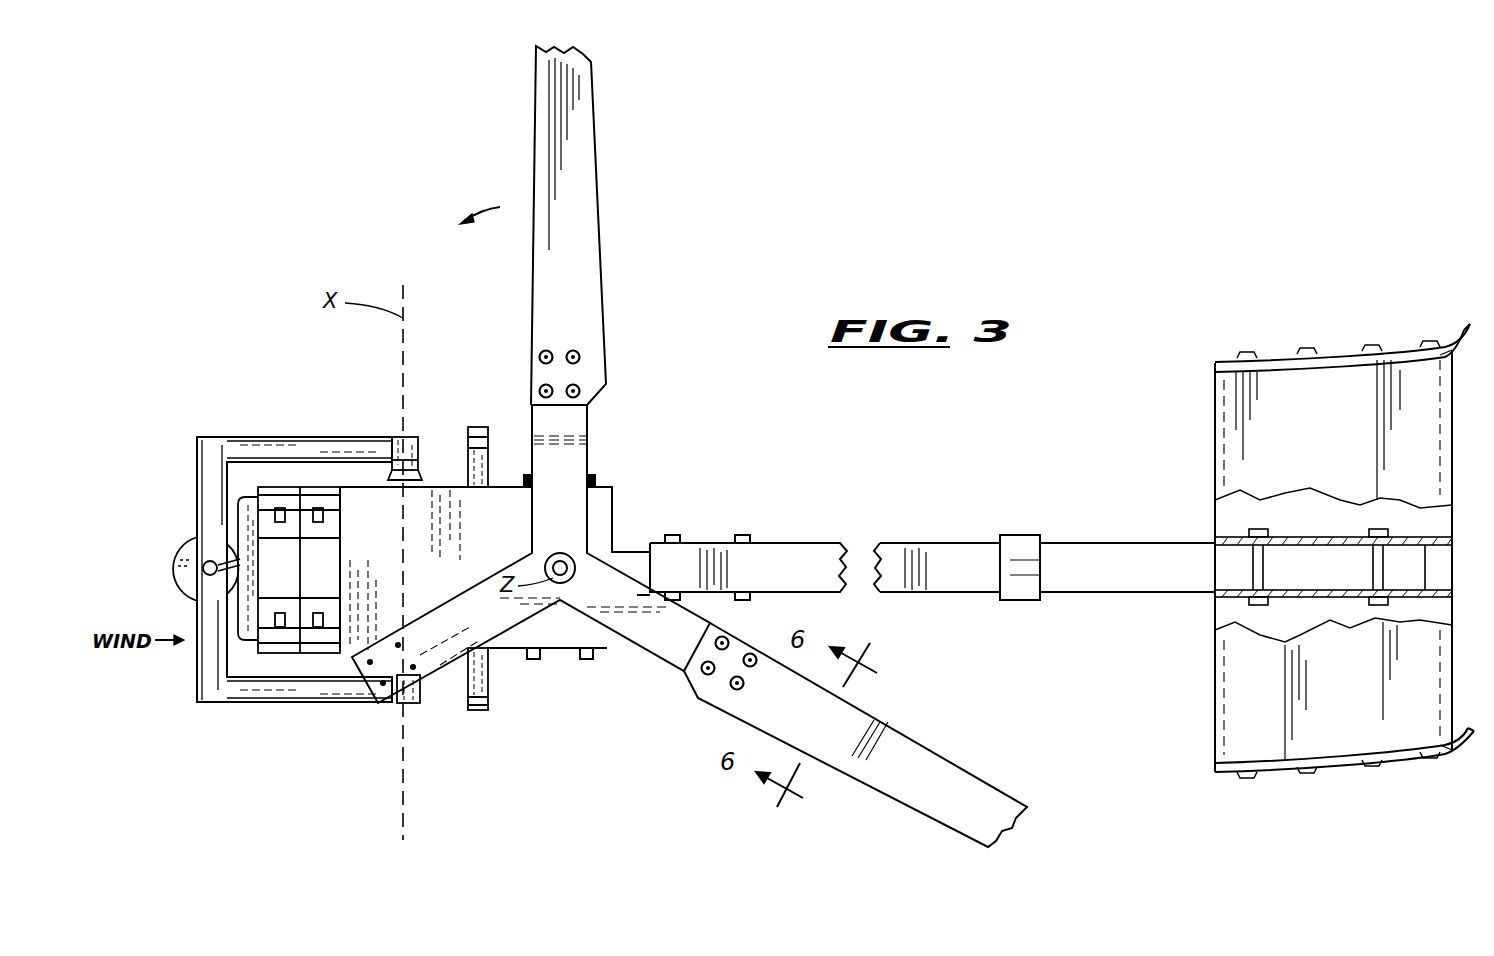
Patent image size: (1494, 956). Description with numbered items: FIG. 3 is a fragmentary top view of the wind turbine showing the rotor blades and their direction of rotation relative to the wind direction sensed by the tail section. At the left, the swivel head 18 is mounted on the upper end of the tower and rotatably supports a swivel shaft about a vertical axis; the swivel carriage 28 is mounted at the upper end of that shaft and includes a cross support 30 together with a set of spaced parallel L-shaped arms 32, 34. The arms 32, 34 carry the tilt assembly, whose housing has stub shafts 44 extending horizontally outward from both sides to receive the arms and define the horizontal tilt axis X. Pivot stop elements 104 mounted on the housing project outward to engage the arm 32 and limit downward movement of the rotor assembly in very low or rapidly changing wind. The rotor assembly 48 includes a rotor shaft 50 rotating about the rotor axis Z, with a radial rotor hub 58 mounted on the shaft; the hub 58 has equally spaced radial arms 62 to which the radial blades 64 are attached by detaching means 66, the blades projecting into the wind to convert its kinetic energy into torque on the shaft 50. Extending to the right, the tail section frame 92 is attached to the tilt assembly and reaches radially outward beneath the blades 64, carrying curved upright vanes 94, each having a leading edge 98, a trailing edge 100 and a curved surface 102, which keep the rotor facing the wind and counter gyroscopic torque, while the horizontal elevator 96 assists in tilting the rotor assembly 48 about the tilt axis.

The swivel head 18 is at (177, 553).
The swivel carriage 28 is at (260, 565).
The cross support 30 is at (212, 472).
The arm 32 is at (318, 683).
The arm 34 is at (312, 448).
The stub shafts 44 is at (412, 460).
The rotor assembly 48 is at (522, 541).
The rotor shaft 50 is at (583, 563).
The radial rotor hub 58 is at (525, 577).
The radial arms 62 is at (531, 555).
The radial blades 64 is at (578, 231).
The detaching means 66 is at (578, 355).
The frame 92 is at (965, 557).
The upright vanes 94 is at (1309, 561).
The elevator 96 is at (1233, 466).
The leading edge 98 is at (1215, 365).
The trailing edge 100 is at (1468, 323).
The curved surface 102 is at (1342, 350).
The pivot stop elements 104 is at (486, 445).